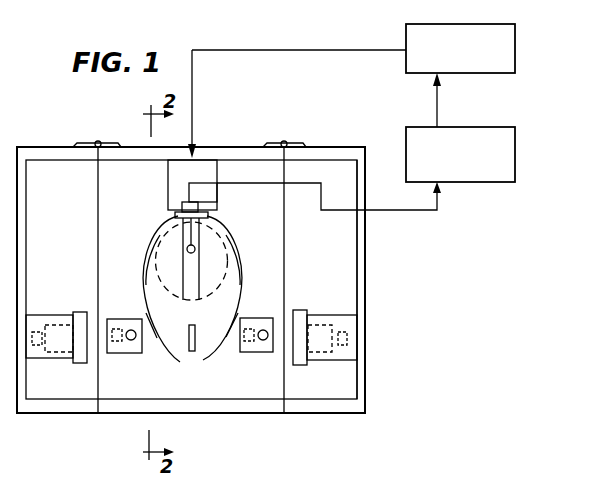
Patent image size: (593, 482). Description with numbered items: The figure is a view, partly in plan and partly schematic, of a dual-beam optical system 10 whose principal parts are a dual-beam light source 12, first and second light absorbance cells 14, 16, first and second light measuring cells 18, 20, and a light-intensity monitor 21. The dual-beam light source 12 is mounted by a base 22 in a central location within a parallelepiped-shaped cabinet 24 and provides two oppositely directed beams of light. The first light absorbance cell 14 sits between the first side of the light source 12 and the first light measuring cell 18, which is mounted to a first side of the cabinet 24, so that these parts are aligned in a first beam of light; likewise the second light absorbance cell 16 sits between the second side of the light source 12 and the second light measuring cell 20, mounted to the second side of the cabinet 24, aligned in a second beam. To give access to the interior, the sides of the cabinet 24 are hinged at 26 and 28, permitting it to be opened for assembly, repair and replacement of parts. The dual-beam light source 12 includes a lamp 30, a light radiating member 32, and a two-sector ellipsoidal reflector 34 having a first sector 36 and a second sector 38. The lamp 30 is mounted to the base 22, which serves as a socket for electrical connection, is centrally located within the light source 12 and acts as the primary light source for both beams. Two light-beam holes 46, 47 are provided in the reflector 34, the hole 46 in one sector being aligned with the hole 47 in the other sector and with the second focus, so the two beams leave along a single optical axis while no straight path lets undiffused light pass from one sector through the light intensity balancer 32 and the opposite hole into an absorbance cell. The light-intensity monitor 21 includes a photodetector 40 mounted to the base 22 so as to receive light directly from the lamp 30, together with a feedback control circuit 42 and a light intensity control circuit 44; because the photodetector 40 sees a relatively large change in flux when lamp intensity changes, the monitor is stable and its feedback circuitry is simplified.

The dual-beam optical system 10 is at (393, 181).
The dual-beam light source 12 is at (223, 220).
The first light absorbance cell 14 is at (128, 354).
The second light absorbance cell 16 is at (274, 351).
The first light measuring cell 18 is at (62, 305).
The second light measuring cell 20 is at (331, 303).
The light-intensity monitor 21 is at (466, 108).
The base 22 is at (168, 192).
The cabinet 24 is at (360, 245).
The hinge 26 is at (82, 143).
The hinge 28 is at (289, 143).
The lamp 30 is at (229, 254).
The light radiating member 32 is at (190, 354).
The two-sector ellipsoidal reflector 34 is at (193, 368).
The first sector 36 is at (154, 252).
The second sector 38 is at (241, 268).
The photodetector 40 is at (195, 200).
The feedback control circuit 42 is at (516, 156).
The light intensity control circuit 44 is at (515, 46).
The light-beam hole 46 is at (238, 313).
The light-beam hole 47 is at (146, 313).